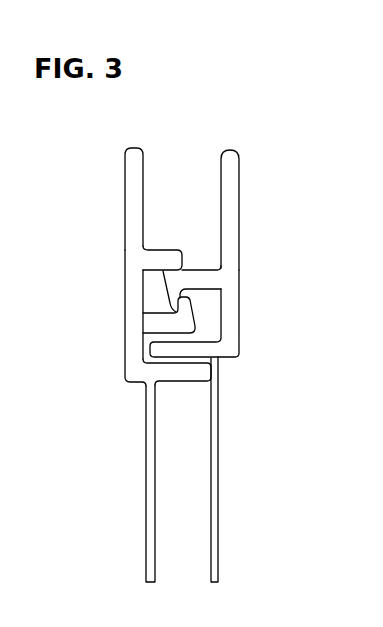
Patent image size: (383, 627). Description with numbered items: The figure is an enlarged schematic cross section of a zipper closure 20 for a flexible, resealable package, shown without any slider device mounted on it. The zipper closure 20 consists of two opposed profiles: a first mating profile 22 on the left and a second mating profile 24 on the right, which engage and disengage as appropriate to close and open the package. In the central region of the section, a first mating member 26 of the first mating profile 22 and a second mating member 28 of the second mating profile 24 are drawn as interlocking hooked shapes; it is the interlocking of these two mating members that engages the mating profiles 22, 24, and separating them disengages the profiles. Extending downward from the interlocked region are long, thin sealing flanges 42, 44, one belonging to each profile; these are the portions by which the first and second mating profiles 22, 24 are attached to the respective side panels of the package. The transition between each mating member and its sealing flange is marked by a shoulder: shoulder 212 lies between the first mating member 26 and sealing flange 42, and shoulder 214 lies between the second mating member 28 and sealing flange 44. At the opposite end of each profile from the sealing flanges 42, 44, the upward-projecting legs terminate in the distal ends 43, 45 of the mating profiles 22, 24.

The zipper closure 20 is at (190, 139).
The first mating profile 22 is at (120, 316).
The second mating profile 24 is at (266, 196).
The first mating member 26 is at (143, 324).
The second mating member 28 is at (222, 279).
The sealing flange 42 is at (146, 433).
The distal end 43 is at (125, 149).
The sealing flange 44 is at (218, 430).
The distal end 45 is at (243, 153).
The shoulder 212 is at (125, 383).
The shoulder 214 is at (239, 360).